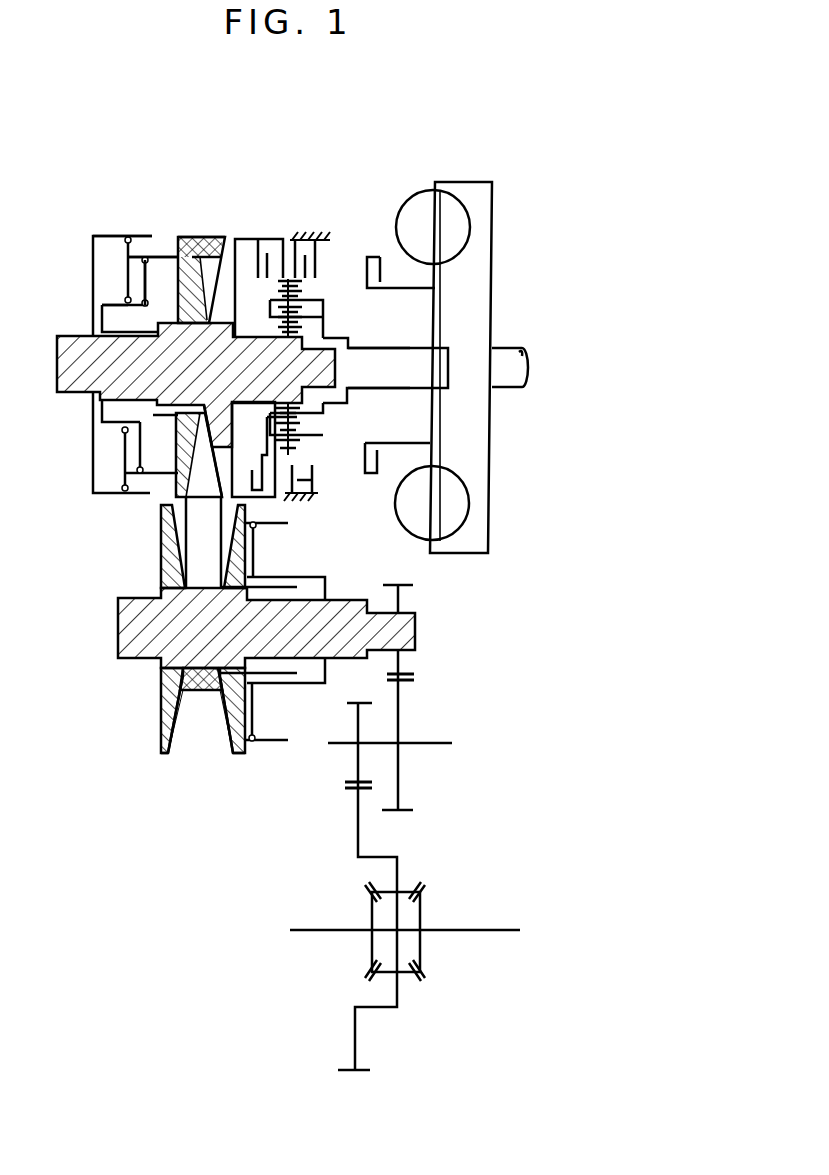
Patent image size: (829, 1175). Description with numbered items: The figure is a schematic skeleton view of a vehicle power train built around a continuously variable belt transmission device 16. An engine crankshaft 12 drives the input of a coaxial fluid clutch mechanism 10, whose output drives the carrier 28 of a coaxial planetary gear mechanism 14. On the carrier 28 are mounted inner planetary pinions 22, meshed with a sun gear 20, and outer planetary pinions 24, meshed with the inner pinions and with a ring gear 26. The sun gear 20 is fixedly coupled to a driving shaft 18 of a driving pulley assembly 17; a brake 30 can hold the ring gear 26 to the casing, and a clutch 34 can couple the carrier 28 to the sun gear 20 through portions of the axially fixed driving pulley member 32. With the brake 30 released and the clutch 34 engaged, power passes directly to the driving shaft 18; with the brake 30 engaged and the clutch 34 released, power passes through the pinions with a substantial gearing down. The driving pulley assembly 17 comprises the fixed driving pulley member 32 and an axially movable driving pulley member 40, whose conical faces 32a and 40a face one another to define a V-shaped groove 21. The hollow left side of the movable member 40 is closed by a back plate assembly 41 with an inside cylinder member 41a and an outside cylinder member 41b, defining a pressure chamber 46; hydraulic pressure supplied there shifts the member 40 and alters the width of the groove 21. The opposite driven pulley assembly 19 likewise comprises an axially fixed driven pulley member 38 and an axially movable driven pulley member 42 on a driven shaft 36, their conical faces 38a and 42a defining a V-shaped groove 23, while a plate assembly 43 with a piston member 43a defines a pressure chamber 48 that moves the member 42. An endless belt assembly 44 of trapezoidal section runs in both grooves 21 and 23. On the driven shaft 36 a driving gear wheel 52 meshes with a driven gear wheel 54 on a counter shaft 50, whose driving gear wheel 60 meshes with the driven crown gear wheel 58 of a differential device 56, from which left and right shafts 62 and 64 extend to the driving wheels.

The fluid clutch mechanism 10 is at (410, 196).
The crankshaft 12 is at (513, 370).
The planetary gear mechanism 14 is at (274, 232).
The continuously variable belt transmission device 16 is at (213, 230).
The driving pulley assembly 17 is at (124, 222).
The driving shaft 18 is at (155, 374).
The driven pulley assembly 19 is at (153, 745).
The sun gear 20 is at (277, 401).
The V-shaped groove 21 is at (203, 242).
The inner planetary pinions 22 is at (296, 314).
The V-shaped groove 23 is at (192, 732).
The outer planetary pinions 24 is at (297, 292).
The ring gear 26 is at (313, 481).
The carrier 28 is at (313, 431).
The brake 30 is at (313, 494).
The axially fixed driving pulley member 32 is at (220, 460).
The conical face 32a is at (226, 238).
The clutch 34 is at (242, 477).
The driven shaft 36 is at (148, 638).
The axially fixed driven pulley member 38 is at (162, 722).
The conical face 38a is at (178, 725).
The axially movable driving pulley member 40 is at (183, 274).
The conical face 40a is at (193, 237).
The back plate assembly 41 is at (93, 322).
The inside cylinder member 41a is at (112, 300).
The outside cylinder member 41b is at (105, 234).
The axially movable driven pulley member 42 is at (232, 720).
The conical face 42a is at (223, 722).
The plate assembly 43 is at (327, 592).
The piston member 43a is at (255, 558).
The endless belt assembly 44 is at (200, 688).
The pressure chamber 46 is at (172, 308).
The pressure chamber 48 is at (252, 713).
The counter shaft 50 is at (380, 742).
The driving gear wheel 52 is at (415, 669).
The driven gear wheel 54 is at (411, 681).
The differential device 56 is at (430, 895).
The driven crown gear wheel 58 is at (350, 790).
The driving gear wheel 60 is at (347, 781).
The left shaft 62 is at (316, 930).
The right shaft 64 is at (500, 930).